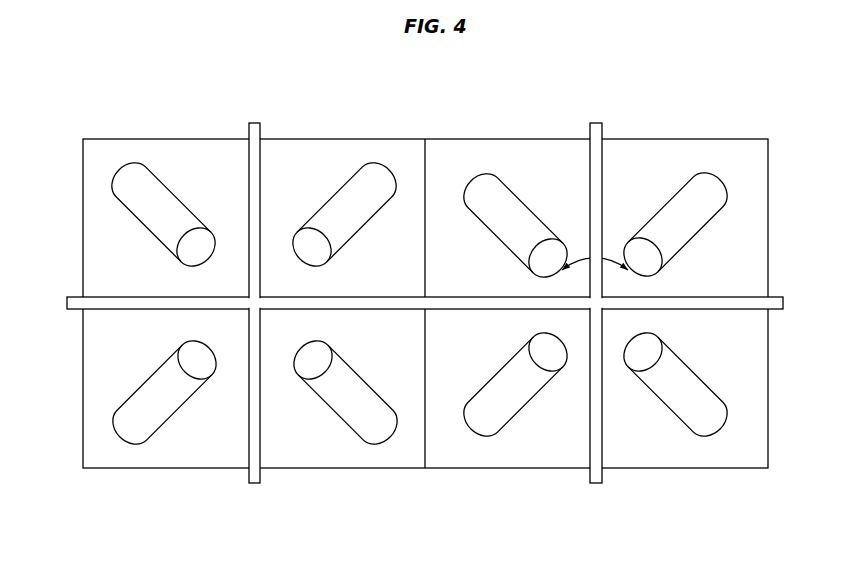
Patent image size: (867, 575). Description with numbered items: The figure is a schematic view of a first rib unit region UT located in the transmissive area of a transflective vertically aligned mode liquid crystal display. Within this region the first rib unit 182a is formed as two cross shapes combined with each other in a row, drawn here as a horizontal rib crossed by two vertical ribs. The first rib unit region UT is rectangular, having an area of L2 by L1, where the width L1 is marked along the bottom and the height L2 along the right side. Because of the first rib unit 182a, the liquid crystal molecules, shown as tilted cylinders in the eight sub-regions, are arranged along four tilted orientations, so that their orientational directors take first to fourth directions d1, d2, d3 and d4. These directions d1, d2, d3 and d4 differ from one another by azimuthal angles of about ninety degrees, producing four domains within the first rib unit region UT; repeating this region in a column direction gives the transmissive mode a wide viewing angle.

The first rib unit region UT is at (83, 158).
The first rib unit 182a is at (597, 123).
The first direction d1 is at (567, 277).
The second direction d2 is at (623, 275).
The third direction d3 is at (567, 332).
The fourth direction d4 is at (623, 332).
The length L1 is at (768, 502).
The length L2 is at (797, 140).